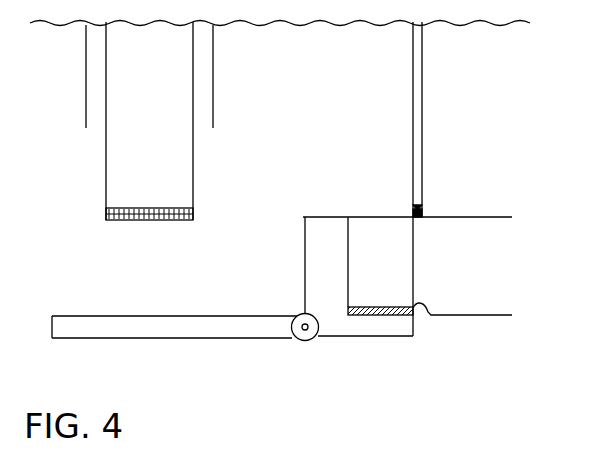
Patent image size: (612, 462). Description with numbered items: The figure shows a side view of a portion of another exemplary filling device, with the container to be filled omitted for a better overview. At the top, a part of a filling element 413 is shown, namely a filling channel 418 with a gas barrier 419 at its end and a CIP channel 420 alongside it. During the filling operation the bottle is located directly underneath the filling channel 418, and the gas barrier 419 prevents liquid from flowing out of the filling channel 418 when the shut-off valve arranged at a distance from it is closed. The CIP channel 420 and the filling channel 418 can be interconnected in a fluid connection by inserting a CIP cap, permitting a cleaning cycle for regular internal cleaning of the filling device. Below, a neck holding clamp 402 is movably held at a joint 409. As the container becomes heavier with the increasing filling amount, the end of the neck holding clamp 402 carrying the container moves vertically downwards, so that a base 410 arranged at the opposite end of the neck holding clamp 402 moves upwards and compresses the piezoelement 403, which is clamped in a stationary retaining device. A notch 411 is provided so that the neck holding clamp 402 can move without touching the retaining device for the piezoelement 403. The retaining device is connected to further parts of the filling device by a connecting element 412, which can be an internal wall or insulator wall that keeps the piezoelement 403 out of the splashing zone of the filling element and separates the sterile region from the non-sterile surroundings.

The neck holding clamp 402 is at (162, 341).
The piezoelement 403 is at (405, 247).
The joint 409 is at (309, 341).
The base 410 is at (367, 307).
The notch 411 is at (425, 318).
The connecting element 412 is at (422, 127).
The filling element 413 is at (223, 98).
The filling channel 418 is at (195, 178).
The gas barrier 419 is at (165, 222).
The CIP channel 420 is at (205, 130).